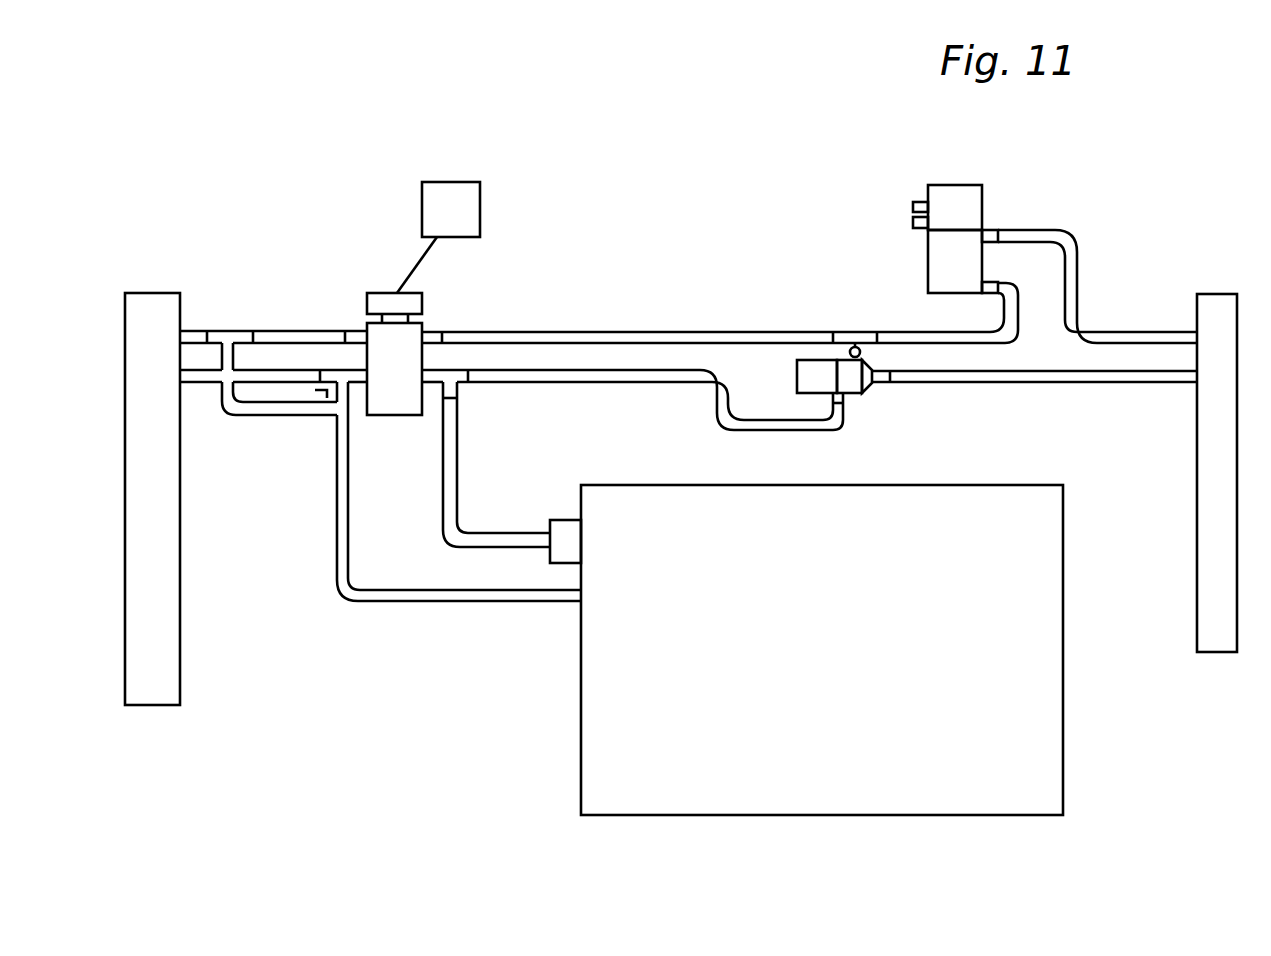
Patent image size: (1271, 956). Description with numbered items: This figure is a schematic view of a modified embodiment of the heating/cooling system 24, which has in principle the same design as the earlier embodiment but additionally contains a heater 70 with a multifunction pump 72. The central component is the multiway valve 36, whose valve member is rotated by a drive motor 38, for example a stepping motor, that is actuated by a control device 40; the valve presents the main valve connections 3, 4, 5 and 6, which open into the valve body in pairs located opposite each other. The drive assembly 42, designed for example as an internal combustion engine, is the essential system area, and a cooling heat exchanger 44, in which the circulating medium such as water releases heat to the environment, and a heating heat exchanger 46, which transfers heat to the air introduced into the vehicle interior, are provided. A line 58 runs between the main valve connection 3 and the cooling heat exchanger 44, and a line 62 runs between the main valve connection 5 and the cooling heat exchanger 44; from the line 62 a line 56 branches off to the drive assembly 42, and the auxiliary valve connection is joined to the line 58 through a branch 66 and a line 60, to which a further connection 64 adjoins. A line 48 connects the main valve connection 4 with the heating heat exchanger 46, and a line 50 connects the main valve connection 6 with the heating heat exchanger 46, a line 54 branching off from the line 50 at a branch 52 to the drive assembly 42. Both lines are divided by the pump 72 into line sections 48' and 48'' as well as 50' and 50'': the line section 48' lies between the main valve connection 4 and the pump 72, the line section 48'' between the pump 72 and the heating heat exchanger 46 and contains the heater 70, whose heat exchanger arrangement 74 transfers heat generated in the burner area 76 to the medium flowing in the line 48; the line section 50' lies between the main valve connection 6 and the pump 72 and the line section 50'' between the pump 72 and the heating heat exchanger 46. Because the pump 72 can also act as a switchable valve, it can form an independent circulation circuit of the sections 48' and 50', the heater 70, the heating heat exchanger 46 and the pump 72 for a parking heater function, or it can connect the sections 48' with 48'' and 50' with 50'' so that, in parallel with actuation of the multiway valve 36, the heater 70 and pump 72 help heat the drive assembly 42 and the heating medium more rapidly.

The heating/cooling system 24 is at (703, 143).
The multiway valve 36 is at (345, 205).
The drive motor 38 is at (387, 293).
The control device 40 is at (453, 182).
The drive assembly 42 is at (742, 792).
The cooling heat exchanger 44 is at (168, 670).
The heating heat exchanger 46 is at (1214, 652).
The line 48 is at (843, 301).
The line section 48' is at (561, 280).
The line section 48'' is at (1097, 300).
The line 50 is at (567, 405).
The line section 50' is at (771, 431).
The line section 50'' is at (1034, 414).
The branch 52 is at (465, 392).
The line 54 is at (497, 533).
The line 56 is at (520, 605).
The line 58 is at (270, 330).
The line 60 is at (322, 420).
The line 62 is at (207, 373).
The bypass line 64 is at (293, 420).
The branch 66 is at (223, 322).
The heater 70 is at (998, 160).
The multifunction pump 72 is at (885, 428).
The heat exchanger arrangement 74 is at (942, 262).
The burner area 76 is at (955, 203).
The main valve connection 3 is at (350, 328).
The main valve connection 4 is at (433, 330).
The main valve connection 5 is at (358, 369).
The main valve connection 6 is at (427, 370).